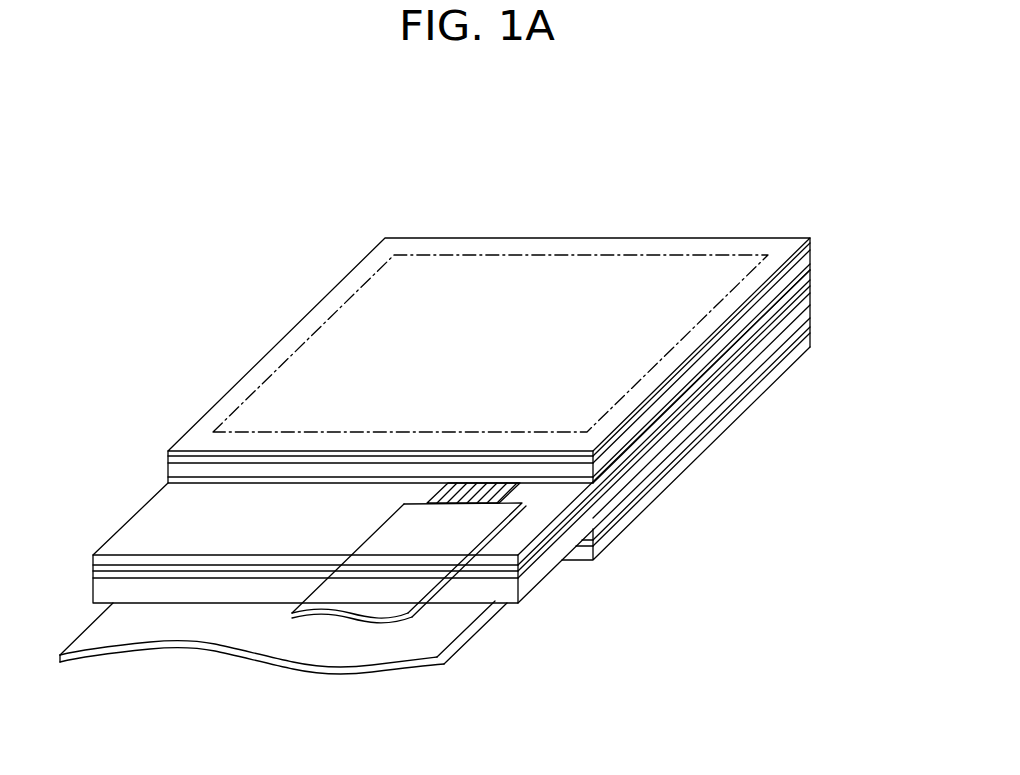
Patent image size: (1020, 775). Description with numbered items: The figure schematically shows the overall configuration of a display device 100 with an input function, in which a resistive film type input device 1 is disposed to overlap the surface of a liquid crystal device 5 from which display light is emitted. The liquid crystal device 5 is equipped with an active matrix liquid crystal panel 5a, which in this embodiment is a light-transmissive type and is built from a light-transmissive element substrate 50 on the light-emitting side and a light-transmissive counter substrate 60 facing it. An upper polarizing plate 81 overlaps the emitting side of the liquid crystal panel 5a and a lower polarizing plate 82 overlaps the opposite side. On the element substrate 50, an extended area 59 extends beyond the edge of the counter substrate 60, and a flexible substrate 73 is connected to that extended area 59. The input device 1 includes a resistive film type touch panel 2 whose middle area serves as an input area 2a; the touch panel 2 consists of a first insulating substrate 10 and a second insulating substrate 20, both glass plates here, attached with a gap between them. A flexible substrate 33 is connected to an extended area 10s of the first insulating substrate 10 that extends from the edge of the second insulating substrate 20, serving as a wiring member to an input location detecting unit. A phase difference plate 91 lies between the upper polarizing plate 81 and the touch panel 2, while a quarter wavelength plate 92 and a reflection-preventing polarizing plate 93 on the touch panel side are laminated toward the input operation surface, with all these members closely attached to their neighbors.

The display device with an input function 100 is at (311, 213).
The resistive film type input device 1 is at (483, 226).
The resistive film type touch panel 2 is at (670, 183).
The input area 2a is at (541, 252).
The first insulating substrate 10 is at (740, 352).
The second insulating substrate 20 is at (780, 292).
The extended area 10s is at (280, 535).
The flexible substrate 33 is at (405, 588).
The flexible substrate 73 is at (328, 647).
The extended area 59 is at (507, 597).
The phase difference plate 91 is at (617, 473).
The ¼ wavelength plate 92 is at (668, 392).
The polarizing plate on the touch panel side 93 is at (698, 350).
The upper polarizing plate 81 is at (692, 415).
The element substrate 50 is at (678, 433).
The counter substrate 60 is at (672, 470).
The lower polarizing plate 82 is at (658, 498).
The liquid crystal panel 5a is at (847, 469).
The liquid crystal device 5 is at (884, 430).